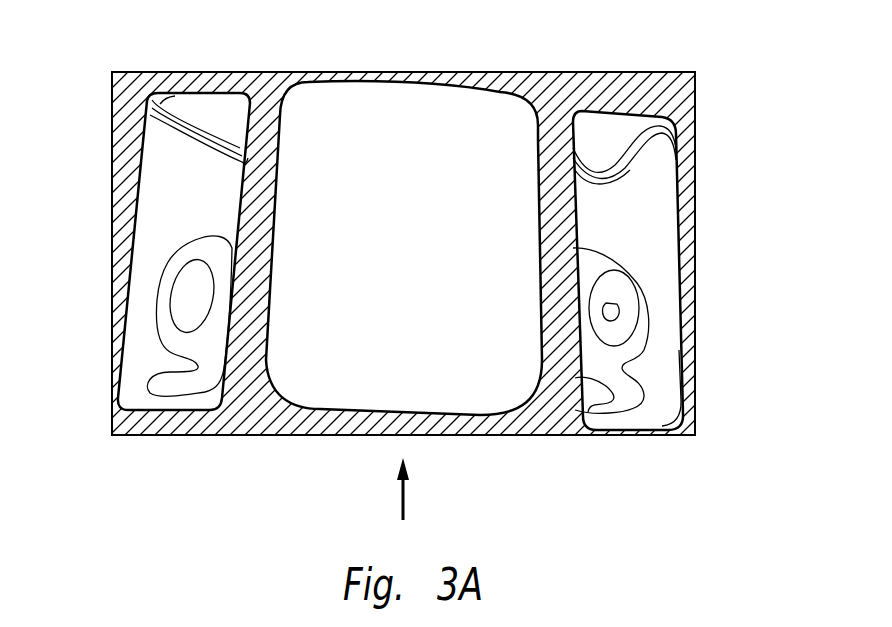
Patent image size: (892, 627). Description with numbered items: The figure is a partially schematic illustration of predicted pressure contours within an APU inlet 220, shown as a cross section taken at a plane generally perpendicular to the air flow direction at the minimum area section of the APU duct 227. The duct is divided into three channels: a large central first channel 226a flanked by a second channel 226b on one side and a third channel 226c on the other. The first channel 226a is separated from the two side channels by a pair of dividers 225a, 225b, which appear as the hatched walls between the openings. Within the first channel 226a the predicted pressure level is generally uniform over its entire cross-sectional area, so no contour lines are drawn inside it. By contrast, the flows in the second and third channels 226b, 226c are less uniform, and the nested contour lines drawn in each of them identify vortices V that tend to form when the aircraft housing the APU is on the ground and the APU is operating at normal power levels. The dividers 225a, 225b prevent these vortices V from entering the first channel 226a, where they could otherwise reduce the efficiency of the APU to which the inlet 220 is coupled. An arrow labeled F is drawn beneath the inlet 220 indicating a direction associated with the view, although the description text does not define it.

The APU inlet 220 is at (740, 85).
The APU duct 227 is at (470, 72).
The first channel 226a is at (333, 372).
The second channel 226b is at (178, 176).
The third channel 226c is at (640, 203).
The divider 225a is at (245, 355).
The divider 225b is at (557, 355).
The vortices V is at (163, 313).
The force direction F is at (408, 489).